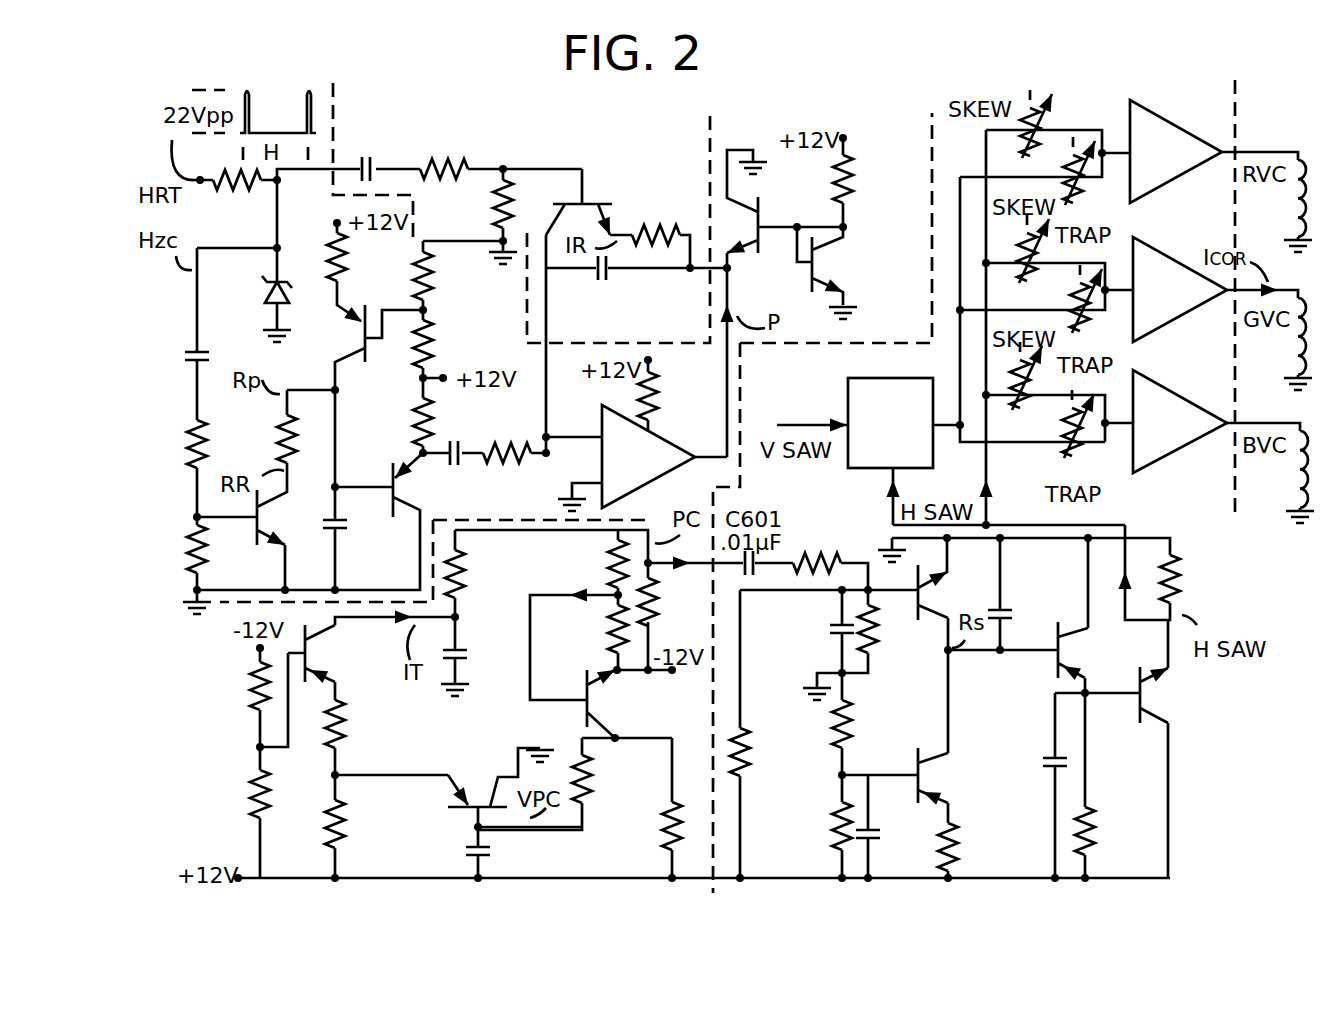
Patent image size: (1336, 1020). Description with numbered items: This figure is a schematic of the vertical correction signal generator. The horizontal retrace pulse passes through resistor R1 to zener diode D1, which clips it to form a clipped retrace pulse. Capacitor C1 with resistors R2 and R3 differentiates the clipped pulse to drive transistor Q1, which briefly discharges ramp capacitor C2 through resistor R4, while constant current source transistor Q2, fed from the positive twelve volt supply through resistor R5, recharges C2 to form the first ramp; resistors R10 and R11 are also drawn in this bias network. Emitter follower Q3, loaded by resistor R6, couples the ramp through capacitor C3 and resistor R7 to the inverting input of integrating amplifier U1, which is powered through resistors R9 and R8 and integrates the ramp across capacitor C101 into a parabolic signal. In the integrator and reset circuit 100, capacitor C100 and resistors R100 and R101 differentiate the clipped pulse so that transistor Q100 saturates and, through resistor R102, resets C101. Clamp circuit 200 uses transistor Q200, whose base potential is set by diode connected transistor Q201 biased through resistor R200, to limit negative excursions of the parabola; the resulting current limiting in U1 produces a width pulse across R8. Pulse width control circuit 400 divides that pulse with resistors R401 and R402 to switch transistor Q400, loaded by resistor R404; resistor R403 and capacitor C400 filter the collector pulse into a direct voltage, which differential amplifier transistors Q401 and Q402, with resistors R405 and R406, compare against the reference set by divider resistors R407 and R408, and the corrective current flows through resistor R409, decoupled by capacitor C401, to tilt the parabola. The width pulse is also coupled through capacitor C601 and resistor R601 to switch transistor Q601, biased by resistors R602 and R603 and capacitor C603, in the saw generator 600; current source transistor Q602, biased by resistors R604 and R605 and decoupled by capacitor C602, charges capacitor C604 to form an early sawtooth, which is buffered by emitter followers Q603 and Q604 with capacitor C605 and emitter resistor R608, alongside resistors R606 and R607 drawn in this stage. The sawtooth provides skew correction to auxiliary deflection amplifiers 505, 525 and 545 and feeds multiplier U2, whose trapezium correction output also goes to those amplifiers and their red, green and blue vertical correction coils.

The horizontal rate integrator and reset pulse generator circuit 100 is at (658, 131).
The clipper or active clamp circuit 200 is at (897, 132).
The pulse width control circuit 400 is at (488, 722).
The second ramp generator 600 is at (1000, 704).
The red vertical correction summing amplifier 505 is at (1176, 151).
The green vertical correction summing amplifier 525 is at (1180, 289).
The blue vertical correction summing amplifier 545 is at (1180, 421).
The integrating amplifier U1 is at (648, 456).
The multiplier U2 is at (890, 423).
The transistor Q100 is at (581, 190).
The clipper transistor Q200 is at (783, 204).
The transistor Q201 is at (853, 273).
The transistor Q1 is at (286, 520).
The constant current source transistor Q2 is at (370, 347).
The emitter follower transistor Q3 is at (387, 484).
The zener diode clipper D1 is at (252, 307).
The capacitor C1 is at (169, 350).
The ramp forming capacitor C2 is at (371, 549).
The capacitor C3 is at (460, 478).
The capacitor C100 is at (374, 145).
The integrating capacitor C101 is at (606, 294).
The resistor R1 is at (238, 205).
The resistor R2 is at (167, 440).
The resistor R3 is at (167, 551).
The resistor R4 is at (257, 437).
The resistor R5 is at (368, 269).
The resistor R6 is at (388, 420).
The resistor R7 is at (508, 428).
The resistor R8 is at (675, 601).
The resistor R9 is at (677, 396).
The resistor R10 is at (462, 343).
The resistor R11 is at (458, 278).
The resistor R100 is at (453, 144).
The resistor R101 is at (466, 207).
The resistor R102 is at (652, 211).
The resistor R200 is at (880, 185).
The saturating switch transistor Q400 is at (625, 701).
The emitter coupled amplifier transistor Q401 is at (501, 778).
The transistor Q402 is at (348, 654).
The resistor R401 is at (586, 560).
The resistor R402 is at (581, 631).
The resistor R403 is at (621, 777).
The resistor R404 is at (637, 835).
The resistor R405 is at (373, 827).
The resistor R406 is at (374, 722).
The resistor R407 is at (221, 798).
The resistor R408 is at (221, 698).
The resistor R409 is at (490, 569).
The capacitor C400 is at (515, 855).
The capacitor C401 is at (486, 667).
The switch transistor Q601 is at (957, 579).
The current source transistor Q602 is at (959, 776).
The emitter follower connected PNP transistor Q603 is at (1097, 651).
The NPN emitter follower transistor Q604 is at (1181, 692).
The resistor R601 is at (822, 540).
The resistor R602 is at (900, 641).
The resistor R603 is at (780, 753).
The resistor R604 is at (876, 720).
The resistor R605 is at (803, 828).
The resistor R606 is at (986, 848).
The resistor R607 is at (1119, 840).
The resistor R608 is at (1209, 580).
The capacitor C601 is at (749, 563).
The decoupling capacitor C602 is at (897, 837).
The capacitor C603 is at (805, 642).
The capacitor C604 is at (1036, 588).
The capacitor C605 is at (1102, 769).